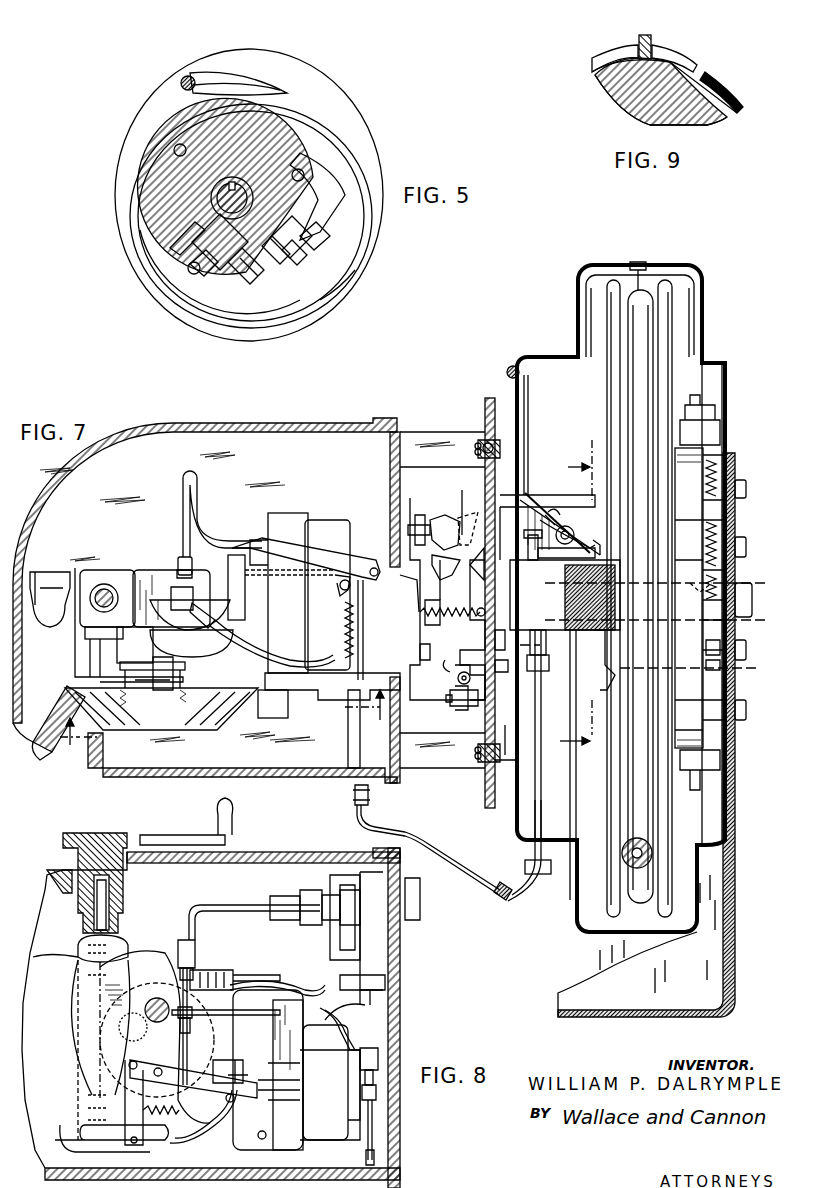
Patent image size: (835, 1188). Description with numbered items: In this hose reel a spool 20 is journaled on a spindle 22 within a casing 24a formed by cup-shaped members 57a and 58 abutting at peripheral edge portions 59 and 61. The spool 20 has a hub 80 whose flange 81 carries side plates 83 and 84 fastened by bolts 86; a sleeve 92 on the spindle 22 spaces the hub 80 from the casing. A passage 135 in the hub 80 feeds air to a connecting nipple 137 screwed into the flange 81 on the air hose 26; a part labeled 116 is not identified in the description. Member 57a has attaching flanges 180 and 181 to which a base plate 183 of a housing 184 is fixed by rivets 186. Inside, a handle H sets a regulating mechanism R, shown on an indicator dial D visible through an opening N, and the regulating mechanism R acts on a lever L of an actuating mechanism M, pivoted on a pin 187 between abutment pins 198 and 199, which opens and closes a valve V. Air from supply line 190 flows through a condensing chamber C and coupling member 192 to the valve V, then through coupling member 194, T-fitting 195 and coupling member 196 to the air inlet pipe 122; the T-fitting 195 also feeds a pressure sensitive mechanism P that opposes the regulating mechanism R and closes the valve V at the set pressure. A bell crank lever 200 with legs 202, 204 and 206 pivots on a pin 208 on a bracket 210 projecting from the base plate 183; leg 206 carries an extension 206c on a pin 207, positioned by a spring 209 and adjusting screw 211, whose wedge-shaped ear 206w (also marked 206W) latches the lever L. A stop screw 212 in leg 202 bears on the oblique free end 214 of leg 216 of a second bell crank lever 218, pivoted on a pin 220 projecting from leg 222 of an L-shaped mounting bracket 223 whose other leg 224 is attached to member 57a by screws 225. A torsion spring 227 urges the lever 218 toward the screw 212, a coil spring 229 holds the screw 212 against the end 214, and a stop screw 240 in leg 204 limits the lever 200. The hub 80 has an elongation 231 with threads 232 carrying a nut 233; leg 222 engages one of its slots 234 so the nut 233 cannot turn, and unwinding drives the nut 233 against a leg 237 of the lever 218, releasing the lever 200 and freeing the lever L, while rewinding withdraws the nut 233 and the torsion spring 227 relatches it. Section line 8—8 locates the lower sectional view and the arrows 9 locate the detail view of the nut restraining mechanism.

In FIG. 5, the strap 116 is at (292, 90).
In FIG. 5, the hub 80 is at (318, 160).
In FIG. 7, the hub 80 is at (668, 650).
In FIG. 5, the flange 81 is at (290, 160).
In FIG. 5, the bolts 86 is at (176, 146).
In FIG. 5, the passage 135 is at (210, 222).
In FIG. 5, the air hose 26 is at (335, 230).
In FIG. 7, the air hose 26 is at (650, 293).
In FIG. 5, the connecting nipple 137 is at (236, 280).
In FIG. 9, the leg 222 is at (646, 36).
In FIG. 7, the leg 222 is at (540, 500).
In FIG. 9, the slots 234 is at (660, 48).
In FIG. 9, the nut 233 is at (745, 95).
In FIG. 7, the nut 233 is at (608, 680).
In FIG. 9, the elongation 231 is at (708, 122).
In FIG. 7, the elongation 231 is at (588, 640).
In FIG. 7, the housing 184 is at (262, 425).
In FIG. 7, the base plate 183 is at (484, 398).
In FIG. 7, the rivets 186 is at (478, 445).
In FIG. 7, the attaching flange 180 is at (500, 430).
In FIG. 7, the leg 224 is at (529, 428).
In FIG. 7, the mounting bracket 223 is at (530, 490).
In FIG. 7, the pin 220 is at (567, 525).
In FIG. 7, the torsion spring 227 is at (585, 540).
In FIG. 7, the leg 237 is at (555, 570).
In FIG. 7, the cup-shaped member 57a is at (578, 296).
In FIG. 7, the peripheral edge portion 59 is at (632, 262).
In FIG. 7, the peripheral edge portion 61 is at (645, 270).
In FIG. 7, the cup-shaped member 58 is at (705, 278).
In FIG. 7, the spool 20 is at (685, 303).
In FIG. 7, the casing 24a is at (708, 324).
In FIG. 7, the side plate 83 is at (607, 332).
In FIG. 7, the side plate 84 is at (672, 345).
In FIG. 7, the spindle 22 is at (738, 580).
In FIG. 7, the screws 225 is at (484, 560).
In FIG. 7, the leg 216 is at (450, 515).
In FIG. 7, the second bell crank lever 218 is at (478, 505).
In FIG. 7, the stop screw 212 is at (414, 523).
In FIG. 7, the free end 214 is at (445, 567).
In FIG. 7, the leg 202 is at (420, 577).
In FIG. 7, the coil spring 229 is at (452, 602).
In FIG. 7, the T-fitting 195 is at (419, 614).
In FIG. 8, the T-fitting 195 is at (380, 1082).
In FIG. 7, the spring 209 is at (365, 652).
In FIG. 7, the stop screw 240 is at (465, 680).
In FIG. 7, the bracket 210 is at (470, 660).
In FIG. 7, the bell crank lever 200 is at (438, 678).
In FIG. 7, the leg 204 is at (465, 710).
In FIG. 7, the sleeve 92 is at (503, 641).
In FIG. 7, the pin 208 is at (507, 667).
In FIG. 7, the extension 206c is at (312, 552).
In FIG. 8, the extension 206c is at (233, 1005).
In FIG. 7, the pin 207 is at (372, 565).
In FIG. 7, the wedge-shaped ear 206w is at (272, 611).
In FIG. 7, the adjusting screw 211 is at (340, 588).
In FIG. 7, the coupling member 194 is at (356, 650).
In FIG. 8, the coupling member 194 is at (278, 985).
In FIG. 7, the leg 206 is at (358, 700).
In FIG. 8, the leg 206 is at (322, 975).
In FIG. 7, the coupling member 196 is at (352, 778).
In FIG. 8, the coupling member 196 is at (376, 1157).
In FIG. 7, the coupling member 192 is at (198, 502).
In FIG. 8, the coupling member 192 is at (262, 905).
In FIG. 7, the air inlet pipe 122 is at (534, 850).
In FIG. 7, the attaching flange 181 is at (508, 740).
In FIG. 7, the screw threads 232 is at (556, 660).
In FIG. 7, the section line 8— 8 is at (220, 732).
In FIG. 7, the detail view indicator 9 is at (579, 607).
In FIG. 7, the regulating mechanism R is at (98, 565).
In FIG. 8, the regulating mechanism R is at (78, 950).
In FIG. 7, the valve V is at (178, 590).
In FIG. 8, the valve V is at (182, 940).
In FIG. 7, the indicator dial D is at (95, 690).
In FIG. 7, the opening N is at (55, 712).
In FIG. 7, the pressure sensitive mechanism P is at (325, 615).
In FIG. 8, the pressure sensitive mechanism P is at (309, 1082).
In FIG. 8, the handle H is at (178, 835).
In FIG. 8, the condensing chamber C is at (355, 875).
In FIG. 8, the actuating mechanism M is at (208, 1072).
In FIG. 8, the lever L is at (225, 1095).
In FIG. 8, the pin 187 is at (161, 1100).
In FIG. 8, the pin 198 is at (213, 1116).
In FIG. 8, the pin 199 is at (238, 1062).
In FIG. 8, the wedge-shaped ear 206W is at (225, 1060).
In FIG. 8, the supply line 190 is at (318, 895).